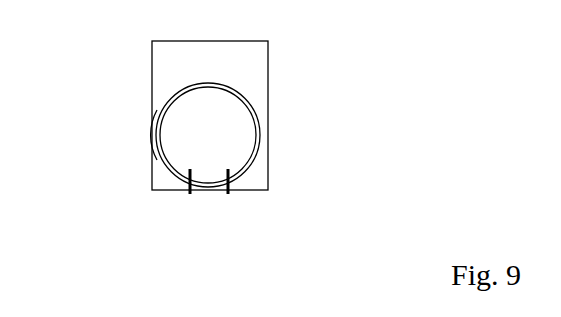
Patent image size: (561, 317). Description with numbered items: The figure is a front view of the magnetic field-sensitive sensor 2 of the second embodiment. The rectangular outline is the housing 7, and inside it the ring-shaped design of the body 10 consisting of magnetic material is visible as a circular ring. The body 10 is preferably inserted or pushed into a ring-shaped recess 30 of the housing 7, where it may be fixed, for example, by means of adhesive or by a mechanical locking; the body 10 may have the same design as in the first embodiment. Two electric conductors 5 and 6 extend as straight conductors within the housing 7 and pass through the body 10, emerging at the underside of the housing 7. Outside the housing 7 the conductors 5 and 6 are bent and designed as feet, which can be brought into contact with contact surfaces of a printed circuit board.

The magnetic field-sensitive sensor 2 is at (98, 64).
The housing 7 is at (243, 63).
The body 10 is at (268, 157).
The ring-shaped recess 30 is at (157, 132).
The electric conductor 6 is at (191, 194).
The electric conductor 5 is at (229, 194).